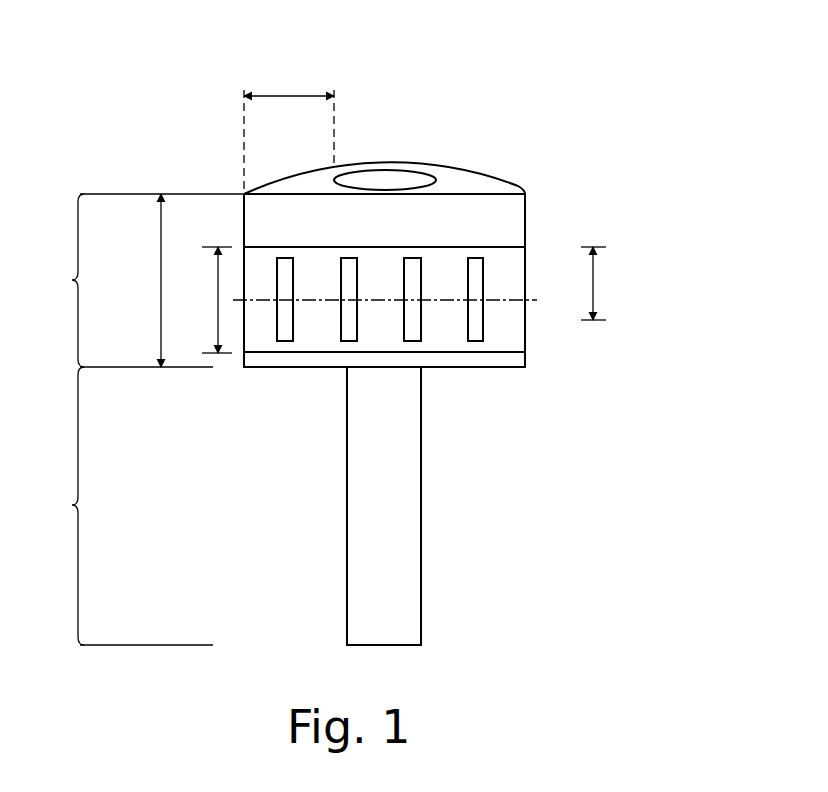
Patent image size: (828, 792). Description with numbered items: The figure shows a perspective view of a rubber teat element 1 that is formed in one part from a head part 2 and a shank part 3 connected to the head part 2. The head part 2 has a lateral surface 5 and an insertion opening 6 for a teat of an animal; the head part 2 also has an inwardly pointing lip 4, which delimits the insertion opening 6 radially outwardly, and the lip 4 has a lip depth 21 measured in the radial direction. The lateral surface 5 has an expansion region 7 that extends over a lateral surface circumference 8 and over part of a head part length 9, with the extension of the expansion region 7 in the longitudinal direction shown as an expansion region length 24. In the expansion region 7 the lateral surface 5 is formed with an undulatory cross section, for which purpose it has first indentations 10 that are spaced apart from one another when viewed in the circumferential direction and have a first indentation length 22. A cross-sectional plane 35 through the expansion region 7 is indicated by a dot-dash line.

The rubber teat element 1 is at (378, 323).
The head part 2 is at (146, 280).
The shank part 3 is at (235, 506).
The lip 4 is at (453, 178).
The lateral surface 5 is at (513, 222).
The insertion opening 6 is at (368, 182).
The expansion region 7 is at (513, 258).
The lateral surface circumference 8 is at (277, 173).
The head part length 9 is at (161, 280).
The first indentations 10 is at (347, 336).
The lip depth 21 is at (287, 92).
The first indentation length 22 is at (595, 282).
The expansion region length 24 is at (218, 298).
The cross-sectional plane 35 is at (530, 300).